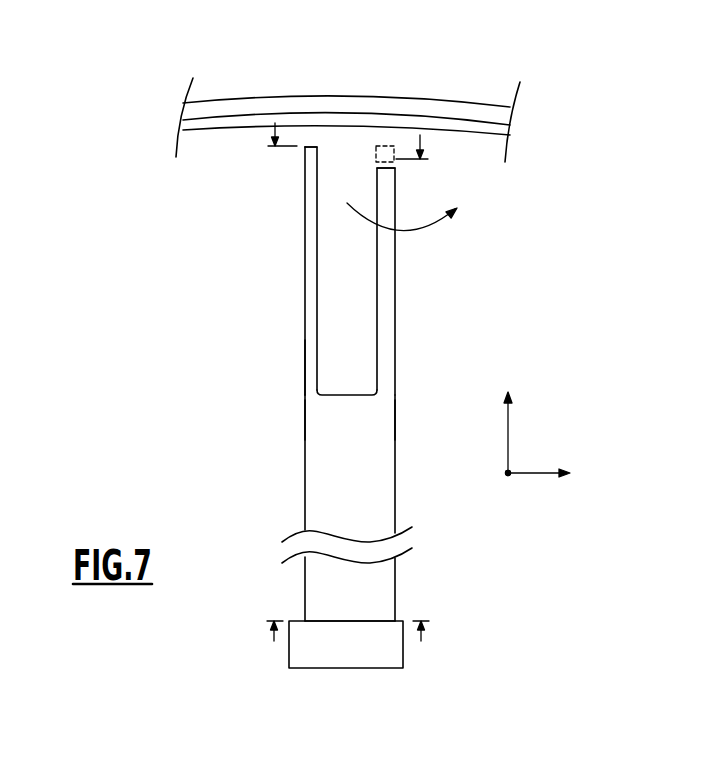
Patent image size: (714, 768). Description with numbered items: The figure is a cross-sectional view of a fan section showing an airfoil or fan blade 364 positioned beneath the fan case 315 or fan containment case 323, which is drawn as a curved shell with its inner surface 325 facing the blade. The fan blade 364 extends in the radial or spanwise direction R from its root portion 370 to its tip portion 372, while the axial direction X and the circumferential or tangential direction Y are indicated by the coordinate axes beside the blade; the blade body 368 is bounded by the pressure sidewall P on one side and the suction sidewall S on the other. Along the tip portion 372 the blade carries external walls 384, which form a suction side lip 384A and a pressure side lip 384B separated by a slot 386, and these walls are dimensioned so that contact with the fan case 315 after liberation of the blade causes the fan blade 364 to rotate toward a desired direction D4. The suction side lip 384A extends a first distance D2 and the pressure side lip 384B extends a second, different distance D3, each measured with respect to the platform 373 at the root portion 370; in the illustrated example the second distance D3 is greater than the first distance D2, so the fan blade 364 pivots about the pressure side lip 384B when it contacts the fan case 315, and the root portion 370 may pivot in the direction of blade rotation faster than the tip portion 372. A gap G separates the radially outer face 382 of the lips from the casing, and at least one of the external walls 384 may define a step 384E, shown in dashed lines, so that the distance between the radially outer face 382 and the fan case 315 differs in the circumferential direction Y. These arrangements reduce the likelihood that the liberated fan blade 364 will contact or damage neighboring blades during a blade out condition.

The fan case 315 is at (317, 81).
The fan containment case 323 is at (317, 81).
The casing inner surface 325 is at (346, 81).
The fan blade 364 is at (243, 254).
The stem body 368 is at (298, 468).
The root portion 370 is at (393, 652).
The tip portion 372 is at (298, 368).
The platform 373 is at (398, 620).
The radially outer face 382 is at (377, 180).
The external walls 384 is at (352, 227).
The suction side lip 384A is at (305, 324).
The pressure side lip 384B is at (467, 227).
The step 384E is at (385, 147).
The slot 386 is at (371, 319).
The gap G is at (245, 142).
The first distance D2 is at (268, 146).
The second distance D3 is at (426, 140).
The desired direction D4 is at (433, 228).
The pressure sidewall P is at (395, 424).
The suction sidewall S is at (305, 412).
The radial direction R is at (508, 440).
The axial direction X is at (508, 475).
The circumferential direction Y is at (537, 474).